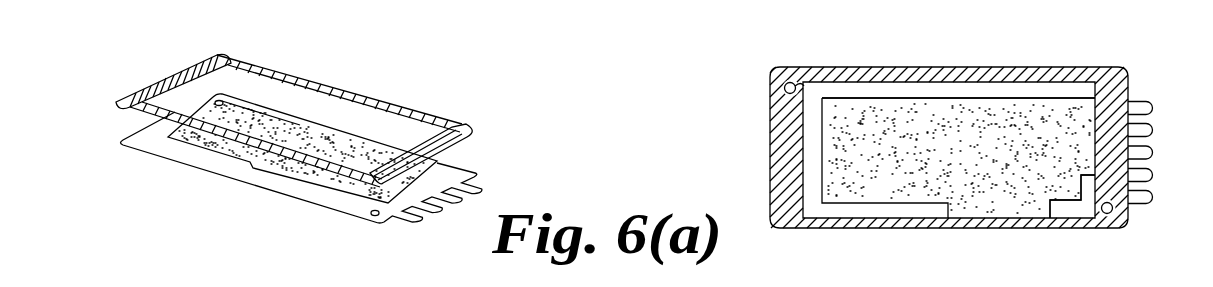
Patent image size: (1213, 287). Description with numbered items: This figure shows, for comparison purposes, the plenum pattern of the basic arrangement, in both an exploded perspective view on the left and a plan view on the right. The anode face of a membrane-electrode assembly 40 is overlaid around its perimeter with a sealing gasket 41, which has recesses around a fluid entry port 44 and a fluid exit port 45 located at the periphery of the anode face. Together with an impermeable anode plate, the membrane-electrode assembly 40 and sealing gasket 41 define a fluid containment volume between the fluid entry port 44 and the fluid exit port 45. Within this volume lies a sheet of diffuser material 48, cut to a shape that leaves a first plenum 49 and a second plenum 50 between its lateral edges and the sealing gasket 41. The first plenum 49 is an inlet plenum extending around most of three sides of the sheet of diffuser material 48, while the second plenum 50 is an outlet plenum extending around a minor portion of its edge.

The membrane-electrode assembly 40 is at (158, 143).
The sealing gasket 41 is at (452, 126).
The fluid entry port 44 is at (784, 87).
The fluid exit port 45 is at (1128, 216).
The sheet of diffuser material 48 is at (273, 167).
The first plenum 49 is at (930, 92).
The second plenum 50 is at (1080, 213).